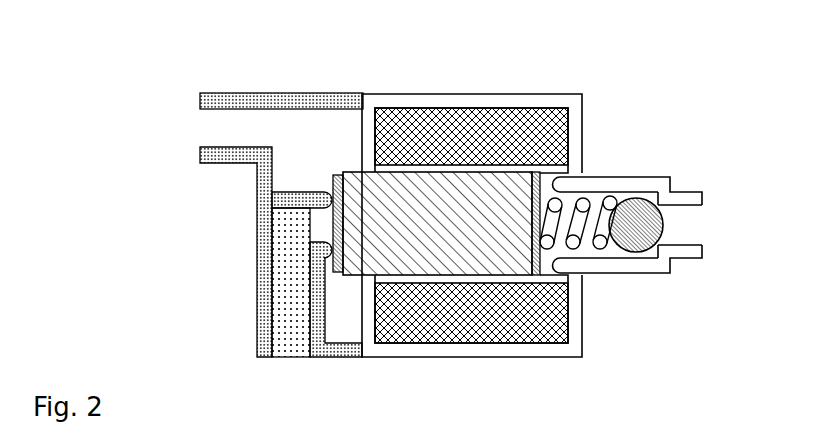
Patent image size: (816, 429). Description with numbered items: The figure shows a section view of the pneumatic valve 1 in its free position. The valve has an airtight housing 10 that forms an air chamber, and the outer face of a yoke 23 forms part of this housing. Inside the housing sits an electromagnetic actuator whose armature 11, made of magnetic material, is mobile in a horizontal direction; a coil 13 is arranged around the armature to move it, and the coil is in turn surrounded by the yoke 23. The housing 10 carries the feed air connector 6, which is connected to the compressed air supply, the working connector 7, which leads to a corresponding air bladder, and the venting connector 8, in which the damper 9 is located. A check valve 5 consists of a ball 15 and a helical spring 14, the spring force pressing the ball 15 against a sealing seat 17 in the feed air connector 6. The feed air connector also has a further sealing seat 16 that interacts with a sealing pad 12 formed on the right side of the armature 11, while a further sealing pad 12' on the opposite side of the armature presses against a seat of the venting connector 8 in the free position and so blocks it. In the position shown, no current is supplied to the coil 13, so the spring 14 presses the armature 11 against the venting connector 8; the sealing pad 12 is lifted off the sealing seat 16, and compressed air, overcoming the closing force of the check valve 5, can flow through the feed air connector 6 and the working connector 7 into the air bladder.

The pneumatic valve 1 is at (491, 183).
The check valve 5 is at (608, 250).
The feed air connector 6 is at (698, 228).
The working connector 7 is at (198, 132).
The venting connector 8 is at (318, 220).
The damper 9 is at (290, 342).
The housing 10 is at (268, 92).
The armature 11 is at (352, 258).
The sealing pad 12 is at (442, 297).
The further sealing pad 12' is at (339, 193).
The coil 13 is at (502, 125).
The helical spring 14 is at (612, 196).
The ball 15 is at (667, 225).
The further sealing seat 16 is at (560, 188).
The sealing seat 17 is at (668, 192).
The yoke 23 is at (413, 100).